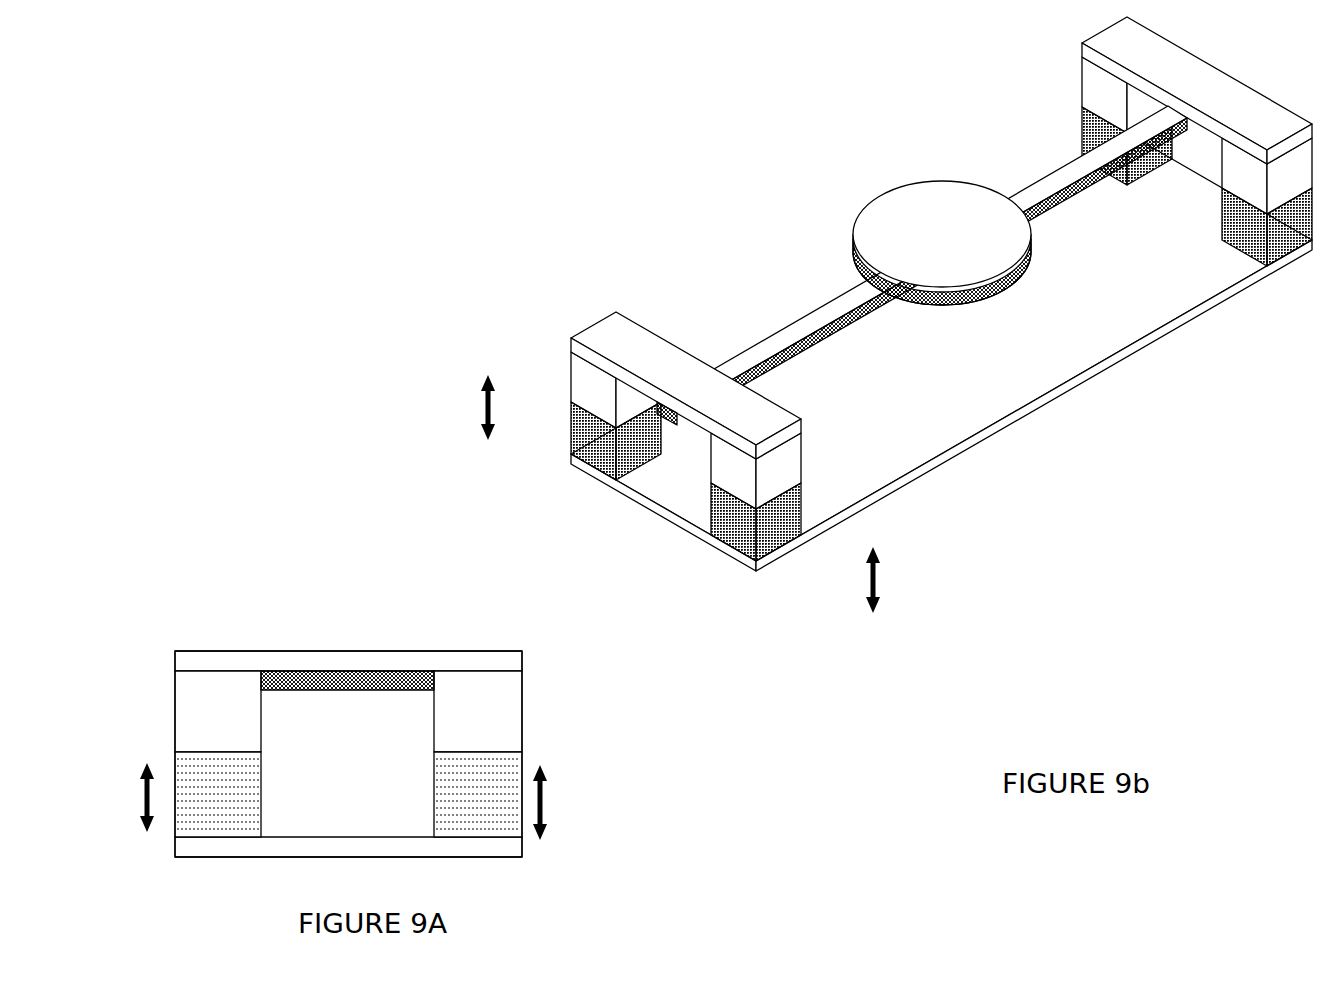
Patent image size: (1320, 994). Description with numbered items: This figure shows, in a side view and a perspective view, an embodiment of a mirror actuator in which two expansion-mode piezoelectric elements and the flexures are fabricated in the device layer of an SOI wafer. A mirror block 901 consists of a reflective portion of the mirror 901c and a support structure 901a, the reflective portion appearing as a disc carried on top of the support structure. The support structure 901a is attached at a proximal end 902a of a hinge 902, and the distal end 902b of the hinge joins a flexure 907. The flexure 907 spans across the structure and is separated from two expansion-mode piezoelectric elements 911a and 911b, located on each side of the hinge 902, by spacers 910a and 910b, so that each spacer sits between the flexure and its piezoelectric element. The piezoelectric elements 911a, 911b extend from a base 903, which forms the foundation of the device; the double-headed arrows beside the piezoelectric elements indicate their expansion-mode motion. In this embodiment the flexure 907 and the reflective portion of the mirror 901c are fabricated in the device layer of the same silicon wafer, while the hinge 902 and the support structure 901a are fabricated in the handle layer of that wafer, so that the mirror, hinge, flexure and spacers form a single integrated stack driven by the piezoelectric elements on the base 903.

In FIG. 9B, the mirror block 901 is at (888, 166).
In FIG. 9A, the support structure 901a is at (286, 669).
In FIG. 9B, the support structure 901a is at (1030, 283).
In FIG. 9B, the reflective portion of the mirror 901c is at (942, 208).
In FIG. 9B, the hinge 902 is at (788, 326).
In FIG. 9B, the proximal end of hinge 902a is at (830, 270).
In FIG. 9A, the distal end of hinge 902b is at (348, 668).
In FIG. 9B, the distal end of hinge 902b is at (664, 400).
In FIG. 9A, the base 903 is at (468, 848).
In FIG. 9B, the base 903 is at (1080, 397).
In FIG. 9A, the flexure 907 is at (484, 645).
In FIG. 9B, the flexure 907 is at (626, 330).
In FIG. 9A, the spacer 910a is at (528, 706).
In FIG. 9B, the spacer 910a is at (797, 460).
In FIG. 9A, the spacer 910b is at (172, 695).
In FIG. 9B, the spacer 910b is at (603, 377).
In FIG. 9A, the expansion-mode piezoelectric element 911a is at (528, 766).
In FIG. 9B, the expansion-mode piezoelectric element 911a is at (848, 556).
In FIG. 9A, the expansion-mode piezoelectric element 911b is at (166, 767).
In FIG. 9B, the expansion-mode piezoelectric element 911b is at (597, 433).